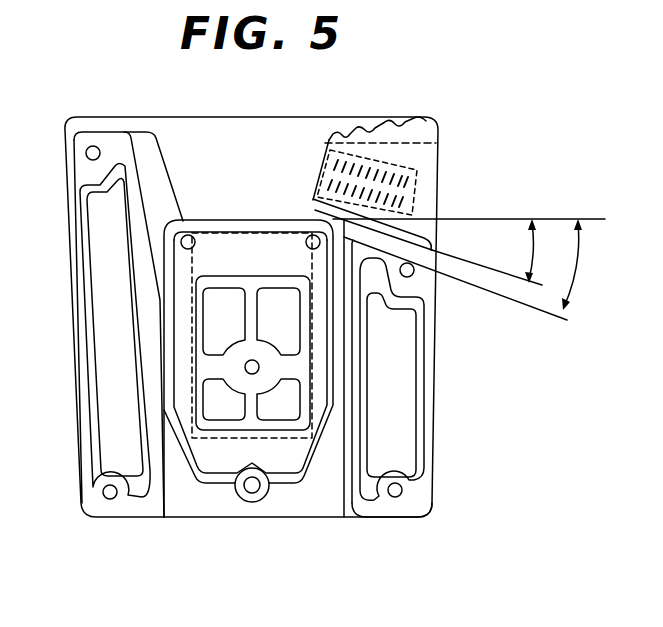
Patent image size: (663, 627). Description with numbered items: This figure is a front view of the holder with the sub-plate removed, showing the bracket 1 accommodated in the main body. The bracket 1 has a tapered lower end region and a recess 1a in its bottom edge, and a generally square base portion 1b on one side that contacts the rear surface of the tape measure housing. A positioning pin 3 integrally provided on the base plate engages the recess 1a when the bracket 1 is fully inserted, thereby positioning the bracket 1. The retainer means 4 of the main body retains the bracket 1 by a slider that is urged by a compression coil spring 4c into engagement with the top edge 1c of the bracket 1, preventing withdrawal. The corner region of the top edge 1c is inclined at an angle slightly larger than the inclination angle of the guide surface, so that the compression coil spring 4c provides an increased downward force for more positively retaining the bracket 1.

The bracket 1 is at (196, 489).
The recess 1a is at (265, 473).
The base portion 1b is at (240, 372).
The top edge 1c is at (311, 200).
The positioning pin 3 is at (250, 499).
The retainer means 4 is at (440, 158).
The compression coil spring 4c is at (368, 162).